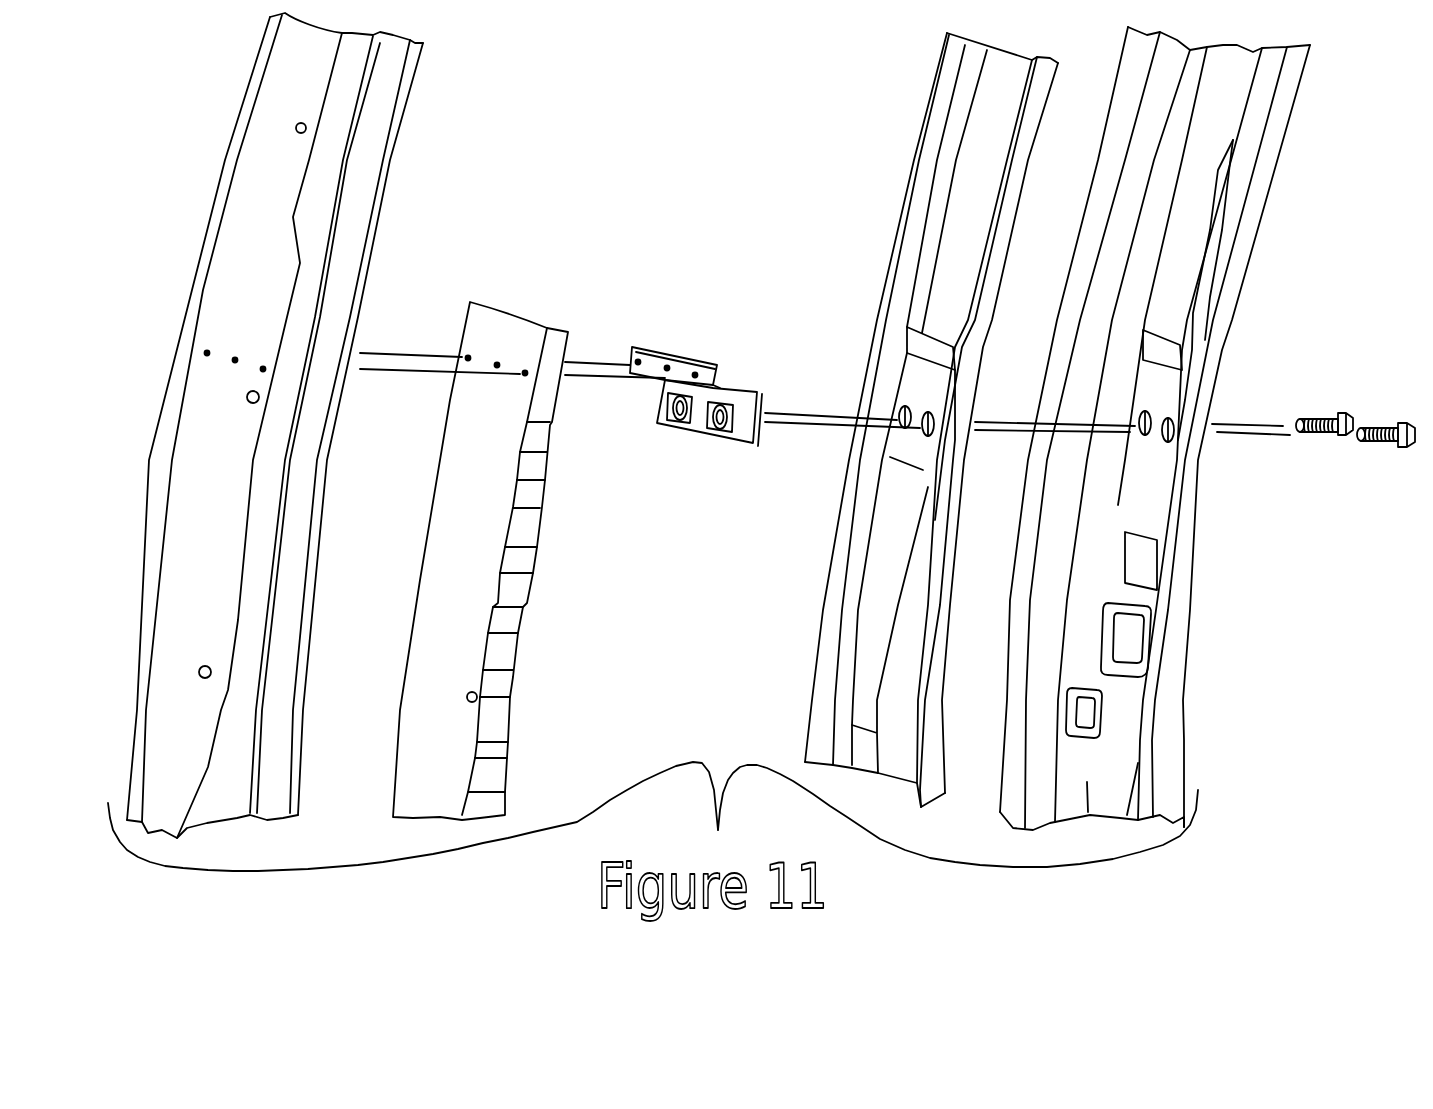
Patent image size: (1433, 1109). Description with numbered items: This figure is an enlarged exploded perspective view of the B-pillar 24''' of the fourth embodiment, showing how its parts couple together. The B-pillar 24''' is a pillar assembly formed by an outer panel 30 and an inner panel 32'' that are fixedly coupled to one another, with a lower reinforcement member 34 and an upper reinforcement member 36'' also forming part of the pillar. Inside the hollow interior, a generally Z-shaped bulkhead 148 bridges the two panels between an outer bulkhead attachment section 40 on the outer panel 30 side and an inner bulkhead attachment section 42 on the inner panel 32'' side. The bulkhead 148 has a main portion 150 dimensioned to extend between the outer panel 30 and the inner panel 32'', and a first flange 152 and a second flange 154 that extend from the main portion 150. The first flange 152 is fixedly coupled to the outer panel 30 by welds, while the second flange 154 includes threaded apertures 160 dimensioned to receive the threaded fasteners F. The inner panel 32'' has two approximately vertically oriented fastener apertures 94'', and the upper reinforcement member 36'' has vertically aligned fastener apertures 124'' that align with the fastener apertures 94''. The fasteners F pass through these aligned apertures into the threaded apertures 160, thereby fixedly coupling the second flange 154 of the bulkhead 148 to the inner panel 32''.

The B-pillar 24''' is at (653, 816).
The outer panel 30 is at (390, 178).
The inner panel 32'' is at (1178, 428).
The lower reinforcement member 34 is at (535, 497).
The upper reinforcement member 36'' is at (871, 420).
The outer bulkhead attachment section 40 is at (249, 362).
The inner bulkhead attachment section 42 is at (1157, 390).
The fastener apertures 94'' is at (1226, 455).
The fastener apertures 124'' is at (921, 430).
The bulkhead 148 is at (683, 392).
The main portion 150 is at (716, 383).
The first flange 152 is at (643, 345).
The second flange 154 is at (678, 447).
The threaded apertures 160 is at (668, 408).
The fasteners F is at (1323, 410).